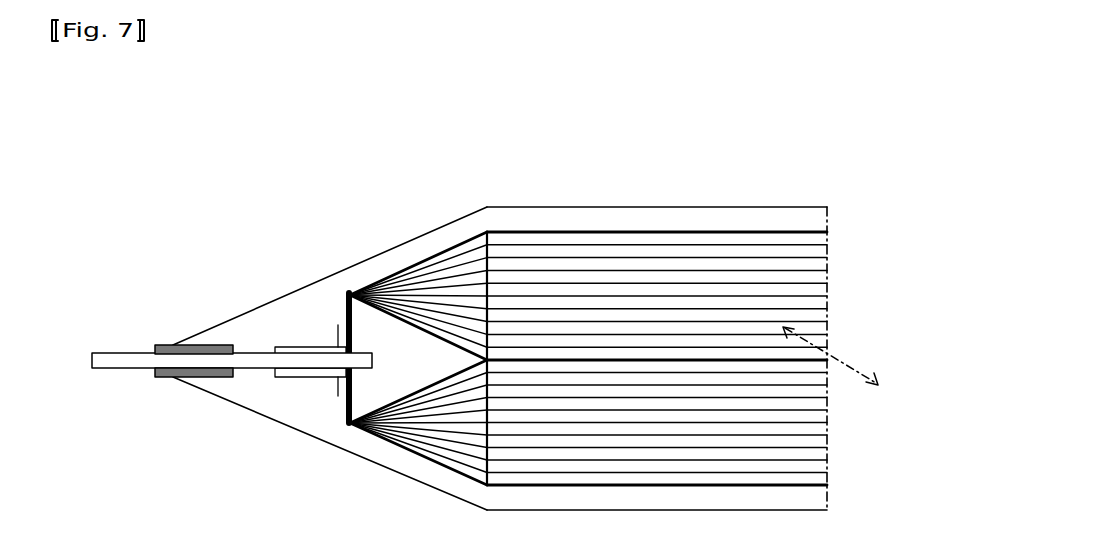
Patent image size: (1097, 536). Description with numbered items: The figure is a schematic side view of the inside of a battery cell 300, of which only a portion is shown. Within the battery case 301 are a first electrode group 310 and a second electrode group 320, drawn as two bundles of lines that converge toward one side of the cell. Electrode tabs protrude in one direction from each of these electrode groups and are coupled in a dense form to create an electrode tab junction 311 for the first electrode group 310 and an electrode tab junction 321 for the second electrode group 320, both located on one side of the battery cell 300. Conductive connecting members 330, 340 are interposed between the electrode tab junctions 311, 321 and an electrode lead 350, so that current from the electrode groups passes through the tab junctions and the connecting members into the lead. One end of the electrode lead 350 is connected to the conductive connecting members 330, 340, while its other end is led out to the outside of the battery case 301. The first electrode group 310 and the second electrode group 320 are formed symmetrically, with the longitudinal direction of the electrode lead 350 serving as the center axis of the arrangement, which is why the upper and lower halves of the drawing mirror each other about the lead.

The battery cell 300 is at (147, 94).
The battery case 301 is at (548, 208).
The first electrode group 310 is at (782, 290).
The electrode tab junction 311 is at (349, 322).
The second electrode group 320 is at (782, 448).
The electrode tab junction 321 is at (348, 398).
The conductive connecting member 330 is at (304, 337).
The conductive connecting member 340 is at (340, 382).
The electrode lead 350 is at (135, 353).